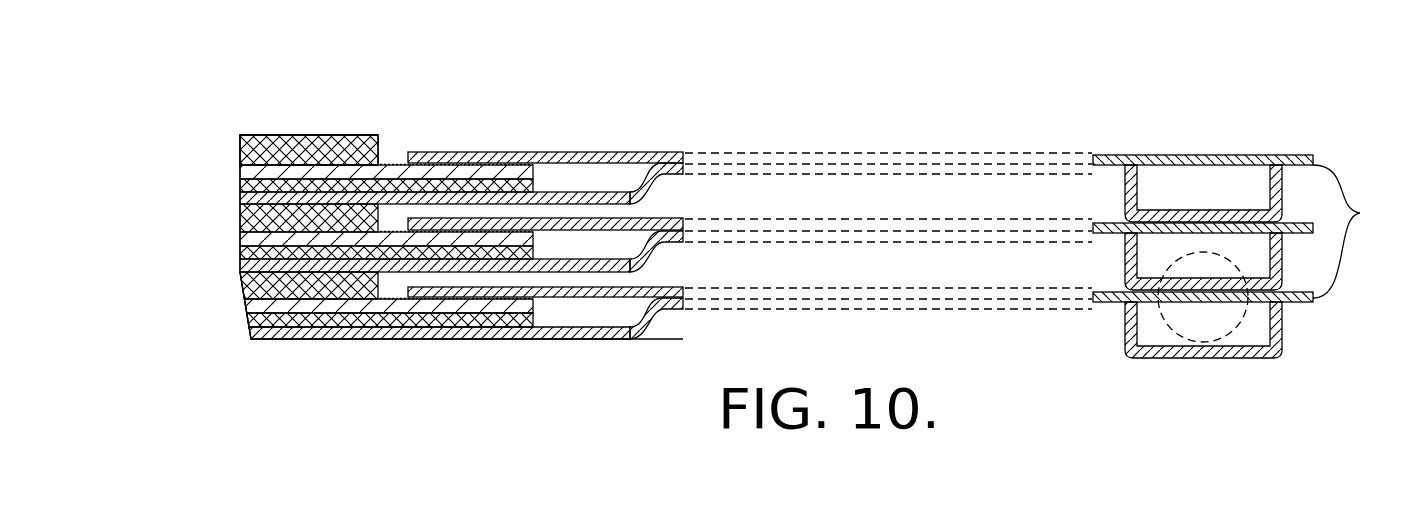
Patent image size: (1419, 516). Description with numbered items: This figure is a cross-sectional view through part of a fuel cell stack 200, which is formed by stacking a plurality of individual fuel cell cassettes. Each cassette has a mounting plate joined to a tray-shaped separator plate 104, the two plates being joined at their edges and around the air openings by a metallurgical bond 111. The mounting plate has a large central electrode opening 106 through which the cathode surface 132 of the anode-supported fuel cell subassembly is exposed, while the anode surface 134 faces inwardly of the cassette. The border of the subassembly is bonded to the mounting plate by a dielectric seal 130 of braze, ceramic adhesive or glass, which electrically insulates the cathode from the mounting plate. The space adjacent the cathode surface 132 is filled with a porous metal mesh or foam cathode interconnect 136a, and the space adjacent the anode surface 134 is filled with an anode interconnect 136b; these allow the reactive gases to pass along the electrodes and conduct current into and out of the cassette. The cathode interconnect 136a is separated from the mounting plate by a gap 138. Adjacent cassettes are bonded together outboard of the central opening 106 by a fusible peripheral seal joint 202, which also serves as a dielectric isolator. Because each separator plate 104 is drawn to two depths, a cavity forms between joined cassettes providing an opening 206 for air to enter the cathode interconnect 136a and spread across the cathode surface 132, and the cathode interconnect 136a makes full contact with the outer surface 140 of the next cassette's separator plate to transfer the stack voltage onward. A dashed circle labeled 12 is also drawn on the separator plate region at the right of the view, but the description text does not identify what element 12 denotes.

The central electrode opening 106 is at (205, 140).
The cathode surface 132 is at (330, 143).
The gap 138 is at (392, 150).
The dielectric seal 130 is at (508, 326).
The fuel cell stack 200 is at (612, 85).
The metallurgical bond 111 is at (685, 300).
The peripheral seal joint 202 is at (1157, 278).
The cathode interconnect 136a is at (240, 218).
The anode interconnect 136b is at (240, 252).
The separator plate 104 is at (245, 292).
The outer surface 140 is at (334, 340).
The anode surface 134 is at (385, 340).
The opening 206 is at (615, 282).
The reservoir 12 is at (1233, 342).